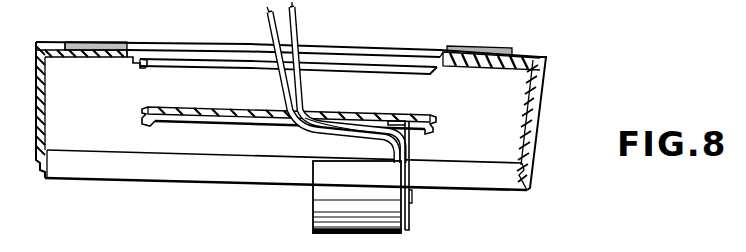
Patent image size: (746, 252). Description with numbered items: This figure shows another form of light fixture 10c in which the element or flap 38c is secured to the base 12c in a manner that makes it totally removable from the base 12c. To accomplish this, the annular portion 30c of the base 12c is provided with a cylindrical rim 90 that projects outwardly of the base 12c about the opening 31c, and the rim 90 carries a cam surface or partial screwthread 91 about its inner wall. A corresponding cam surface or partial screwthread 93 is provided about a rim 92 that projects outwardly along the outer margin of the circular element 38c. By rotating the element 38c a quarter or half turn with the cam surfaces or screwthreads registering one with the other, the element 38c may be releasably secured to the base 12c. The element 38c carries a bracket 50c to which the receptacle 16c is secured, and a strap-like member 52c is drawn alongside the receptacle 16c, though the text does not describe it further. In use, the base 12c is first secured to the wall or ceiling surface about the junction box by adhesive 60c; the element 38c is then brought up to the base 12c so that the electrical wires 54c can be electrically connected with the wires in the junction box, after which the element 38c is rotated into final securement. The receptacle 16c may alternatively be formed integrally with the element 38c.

The light fixture 10c is at (550, 104).
The base 12c is at (540, 120).
The receptacle 16c is at (318, 218).
The annular portion 30c is at (468, 70).
The opening 31c is at (150, 43).
The element or flap 38c is at (192, 108).
The bracket 50c is at (383, 134).
The bracket strap 52c is at (409, 150).
The electrical wires 54c is at (303, 86).
The adhesive 60c is at (510, 50).
The cylindrical rim 90 is at (133, 66).
The cam surface or partial screwthread 91 is at (232, 66).
The rim 92 is at (435, 128).
The cam surface or partial screwthread 93 is at (140, 113).